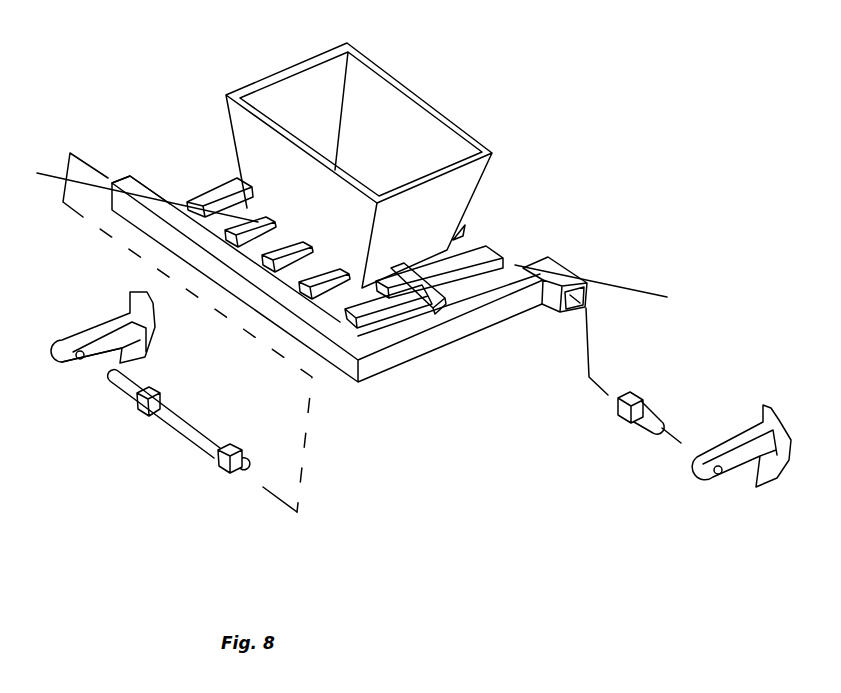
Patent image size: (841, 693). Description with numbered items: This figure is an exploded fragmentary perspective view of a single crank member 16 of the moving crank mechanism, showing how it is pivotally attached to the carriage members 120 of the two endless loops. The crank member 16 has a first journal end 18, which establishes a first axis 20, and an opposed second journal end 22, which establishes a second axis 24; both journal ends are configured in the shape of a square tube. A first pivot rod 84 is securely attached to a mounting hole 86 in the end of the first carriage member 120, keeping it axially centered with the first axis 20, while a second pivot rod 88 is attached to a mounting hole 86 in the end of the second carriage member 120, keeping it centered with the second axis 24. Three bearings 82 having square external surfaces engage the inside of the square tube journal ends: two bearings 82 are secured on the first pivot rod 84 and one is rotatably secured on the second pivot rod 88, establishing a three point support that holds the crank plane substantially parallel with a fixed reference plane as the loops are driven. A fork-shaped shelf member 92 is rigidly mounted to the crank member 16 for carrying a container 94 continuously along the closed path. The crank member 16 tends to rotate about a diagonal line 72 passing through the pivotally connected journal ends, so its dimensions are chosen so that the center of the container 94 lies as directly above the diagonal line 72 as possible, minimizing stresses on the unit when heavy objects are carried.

The crank member 16 is at (425, 343).
The first journal end 18 is at (138, 184).
The first axis 20 is at (98, 373).
The second journal end 22 is at (557, 270).
The second axis 24 is at (674, 433).
The diagonal line 72 is at (230, 212).
The bearing 82 is at (623, 413).
The first pivot rod 84 is at (192, 423).
The mounting hole 86 is at (78, 360).
The second pivot rod 88 is at (645, 430).
The shelf member 92 is at (450, 254).
The container 94 is at (428, 93).
The carriage member 120 is at (97, 330).